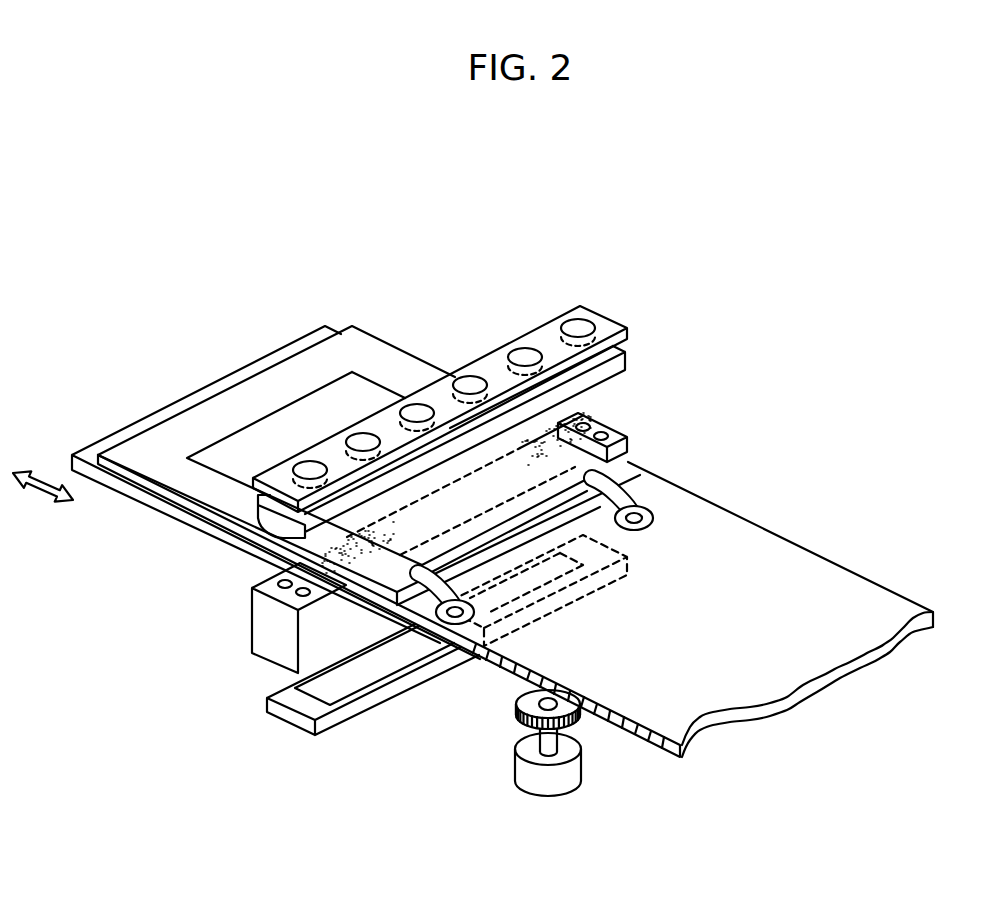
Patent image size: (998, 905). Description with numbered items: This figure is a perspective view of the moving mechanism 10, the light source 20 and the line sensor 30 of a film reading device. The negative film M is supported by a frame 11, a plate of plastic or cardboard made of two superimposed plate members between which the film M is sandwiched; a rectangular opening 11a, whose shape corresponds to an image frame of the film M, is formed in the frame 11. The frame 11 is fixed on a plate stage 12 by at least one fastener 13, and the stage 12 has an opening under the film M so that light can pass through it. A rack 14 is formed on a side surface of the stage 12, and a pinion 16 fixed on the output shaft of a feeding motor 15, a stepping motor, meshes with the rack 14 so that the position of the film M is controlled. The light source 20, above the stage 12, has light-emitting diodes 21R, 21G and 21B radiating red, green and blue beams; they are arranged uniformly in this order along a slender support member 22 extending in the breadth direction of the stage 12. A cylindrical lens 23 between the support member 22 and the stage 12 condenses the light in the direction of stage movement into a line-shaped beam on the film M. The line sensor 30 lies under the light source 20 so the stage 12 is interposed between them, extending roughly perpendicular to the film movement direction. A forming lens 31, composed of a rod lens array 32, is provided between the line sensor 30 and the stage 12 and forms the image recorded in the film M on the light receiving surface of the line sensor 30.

The moving mechanism 10 is at (508, 804).
The frame 11 is at (163, 437).
The rectangular opening 11a is at (195, 463).
The plate stage 12 is at (767, 557).
The fastener 13 is at (641, 492).
The rack 14 is at (657, 740).
The feeding motor 15 is at (548, 787).
The pinion 16 is at (527, 703).
The light source 20 is at (478, 383).
The light-emitting diode 21B is at (470, 378).
The light-emitting diode 21G is at (523, 348).
The light-emitting diode 21R is at (578, 320).
The support member 22 is at (473, 370).
The cylindrical lens 23 is at (612, 360).
The line sensor 30 is at (293, 718).
The forming lens 31 is at (620, 436).
The rod lens array 32 is at (275, 582).
The negative film M is at (267, 423).